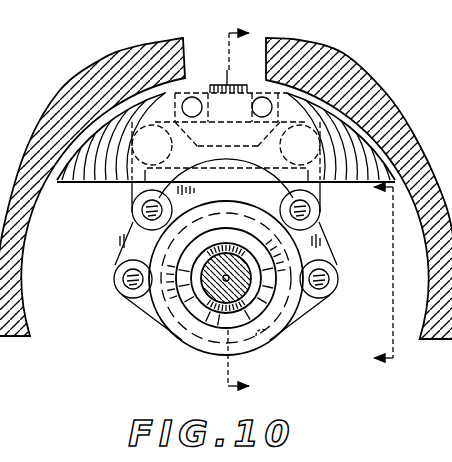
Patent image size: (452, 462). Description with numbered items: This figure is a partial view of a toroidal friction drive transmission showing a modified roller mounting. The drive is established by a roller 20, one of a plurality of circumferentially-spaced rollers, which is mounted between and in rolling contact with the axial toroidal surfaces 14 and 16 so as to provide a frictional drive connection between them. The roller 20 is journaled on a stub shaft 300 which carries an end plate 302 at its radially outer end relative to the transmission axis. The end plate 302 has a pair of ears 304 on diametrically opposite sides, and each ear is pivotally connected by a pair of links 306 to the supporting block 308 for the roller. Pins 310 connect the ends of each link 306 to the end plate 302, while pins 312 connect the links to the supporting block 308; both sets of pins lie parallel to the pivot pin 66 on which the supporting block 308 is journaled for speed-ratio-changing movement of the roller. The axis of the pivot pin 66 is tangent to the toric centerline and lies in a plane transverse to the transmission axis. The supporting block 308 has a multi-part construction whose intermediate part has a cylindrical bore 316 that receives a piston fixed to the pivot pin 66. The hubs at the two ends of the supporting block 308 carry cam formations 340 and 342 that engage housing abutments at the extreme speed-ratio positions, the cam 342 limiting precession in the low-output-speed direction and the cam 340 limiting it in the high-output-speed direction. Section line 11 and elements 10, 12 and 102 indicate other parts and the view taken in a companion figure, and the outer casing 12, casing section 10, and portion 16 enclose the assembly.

The outer casing right section 10 is at (356, 73).
The outer casing left section 12 is at (106, 84).
The toroidal surface 14 is at (335, 118).
The toroidal surface 16 is at (40, 212).
The roller 20 is at (238, 163).
The stub shaft 300 is at (227, 84).
The end plate 302 is at (276, 191).
The ears 304 is at (224, 261).
The links 306 is at (133, 238).
The supporting block 308 is at (265, 344).
The pins 310 is at (142, 210).
The pins 312 is at (128, 280).
The cylindrical bore 316 is at (272, 337).
The cam formation 340 is at (272, 297).
The cam formation 342 is at (226, 179).
The pivot pin 66 is at (223, 300).
The shaft center 102 is at (224, 279).
The section line 11- 11 is at (250, 207).